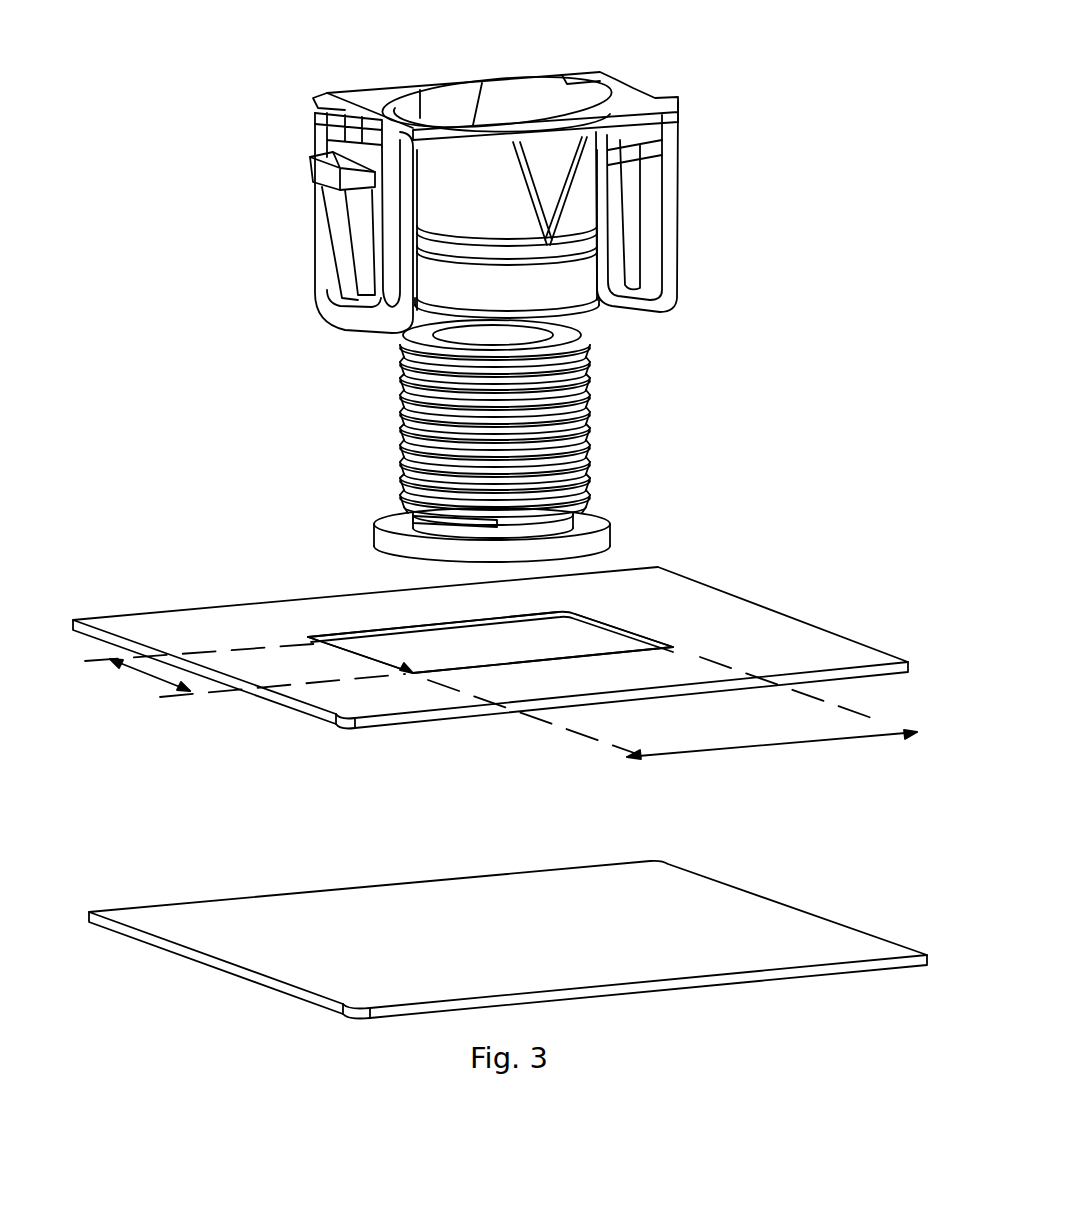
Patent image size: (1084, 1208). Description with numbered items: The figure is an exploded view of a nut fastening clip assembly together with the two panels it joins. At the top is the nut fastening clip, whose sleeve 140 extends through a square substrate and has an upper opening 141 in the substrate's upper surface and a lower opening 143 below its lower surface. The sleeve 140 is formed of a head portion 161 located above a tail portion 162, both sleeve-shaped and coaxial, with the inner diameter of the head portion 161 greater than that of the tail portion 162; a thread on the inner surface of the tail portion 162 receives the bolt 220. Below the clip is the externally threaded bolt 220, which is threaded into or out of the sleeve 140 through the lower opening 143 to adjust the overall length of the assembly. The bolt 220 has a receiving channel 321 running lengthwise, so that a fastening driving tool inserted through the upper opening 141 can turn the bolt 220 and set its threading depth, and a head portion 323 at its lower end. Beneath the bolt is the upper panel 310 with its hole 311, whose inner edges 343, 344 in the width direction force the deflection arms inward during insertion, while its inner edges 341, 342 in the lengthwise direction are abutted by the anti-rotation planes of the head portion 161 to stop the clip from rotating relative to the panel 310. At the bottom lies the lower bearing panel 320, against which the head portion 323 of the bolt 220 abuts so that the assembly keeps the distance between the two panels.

The upper opening 141 is at (458, 108).
The head portion 161 is at (593, 203).
The tail portion 162 is at (577, 268).
The sleeve 140 is at (573, 287).
The lower opening 143 is at (418, 322).
The receiving channel 321 is at (578, 330).
The bolt 220 is at (583, 455).
The head portion of the bolt 323 is at (613, 542).
The upper panel 310 is at (725, 610).
The hole 311 is at (597, 632).
The inner edge of the hole in the lengthwise direction 341 is at (577, 658).
The inner edge of the hole in the lengthwise direction 342 is at (400, 622).
The inner edge of the hole in the width direction 343 is at (350, 655).
The inner edge of the hole in the width direction 344 is at (640, 630).
The lower bearing panel 320 is at (818, 923).